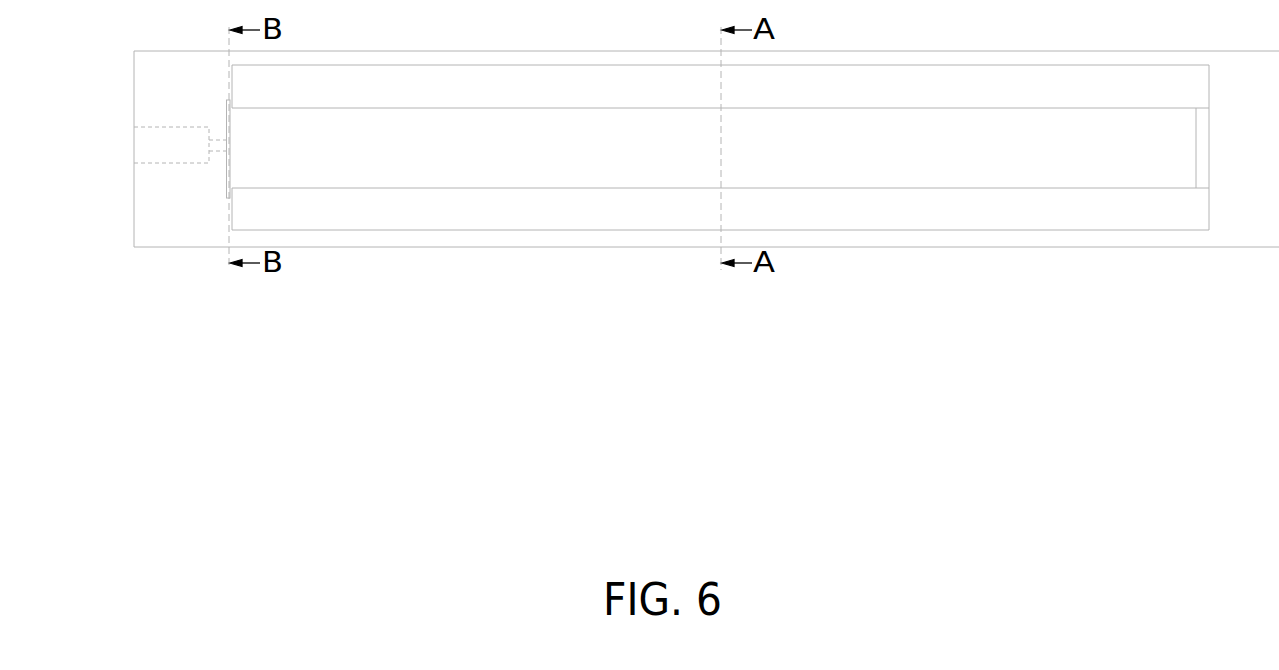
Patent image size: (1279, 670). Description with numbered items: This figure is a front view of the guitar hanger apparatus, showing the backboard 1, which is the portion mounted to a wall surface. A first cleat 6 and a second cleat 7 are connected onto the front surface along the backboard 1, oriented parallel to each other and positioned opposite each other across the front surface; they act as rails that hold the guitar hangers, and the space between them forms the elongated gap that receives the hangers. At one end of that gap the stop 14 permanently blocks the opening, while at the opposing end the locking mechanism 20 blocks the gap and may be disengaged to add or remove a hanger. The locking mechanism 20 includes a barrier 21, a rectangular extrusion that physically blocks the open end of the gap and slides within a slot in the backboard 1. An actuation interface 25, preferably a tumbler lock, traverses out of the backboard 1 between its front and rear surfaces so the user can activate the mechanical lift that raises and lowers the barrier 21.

The locking mechanism 20 is at (110, 144).
The backboard 1 is at (611, 158).
The first cleat 6 is at (611, 100).
The second cleat 7 is at (611, 222).
The stop 14 is at (1203, 148).
The barrier 21 is at (232, 169).
The actuation interface 25 is at (178, 158).